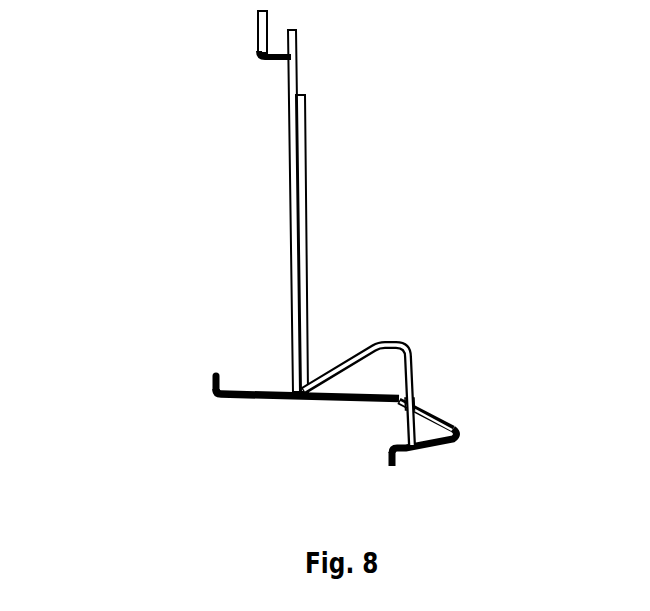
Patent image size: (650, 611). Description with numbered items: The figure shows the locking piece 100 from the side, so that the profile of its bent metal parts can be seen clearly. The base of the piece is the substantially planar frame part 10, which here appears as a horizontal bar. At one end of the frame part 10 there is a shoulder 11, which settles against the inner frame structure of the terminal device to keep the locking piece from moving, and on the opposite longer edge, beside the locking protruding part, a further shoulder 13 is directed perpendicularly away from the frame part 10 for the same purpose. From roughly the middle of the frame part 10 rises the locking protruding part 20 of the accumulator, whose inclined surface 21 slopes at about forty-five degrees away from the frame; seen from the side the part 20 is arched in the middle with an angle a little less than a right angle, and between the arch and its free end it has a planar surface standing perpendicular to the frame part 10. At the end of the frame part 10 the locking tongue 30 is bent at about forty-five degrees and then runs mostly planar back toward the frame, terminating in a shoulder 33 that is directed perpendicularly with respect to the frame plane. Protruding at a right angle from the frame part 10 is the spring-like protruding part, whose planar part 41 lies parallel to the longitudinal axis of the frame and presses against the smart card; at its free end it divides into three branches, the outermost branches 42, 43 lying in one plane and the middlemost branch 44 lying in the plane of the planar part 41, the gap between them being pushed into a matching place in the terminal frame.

The locking piece 100 is at (307, 284).
The frame part 10 is at (307, 436).
The shoulder 11 is at (155, 383).
The shoulder 13 is at (366, 448).
The locking protruding part 20 is at (449, 380).
The surface 21 is at (348, 324).
The locking tongue 30 is at (482, 426).
The shoulder 33 is at (434, 505).
The planar part 41 is at (353, 243).
The protruding part branch 42 is at (180, 31).
The protruding part branch 43 is at (258, 33).
The protruding part branch 44 is at (340, 203).